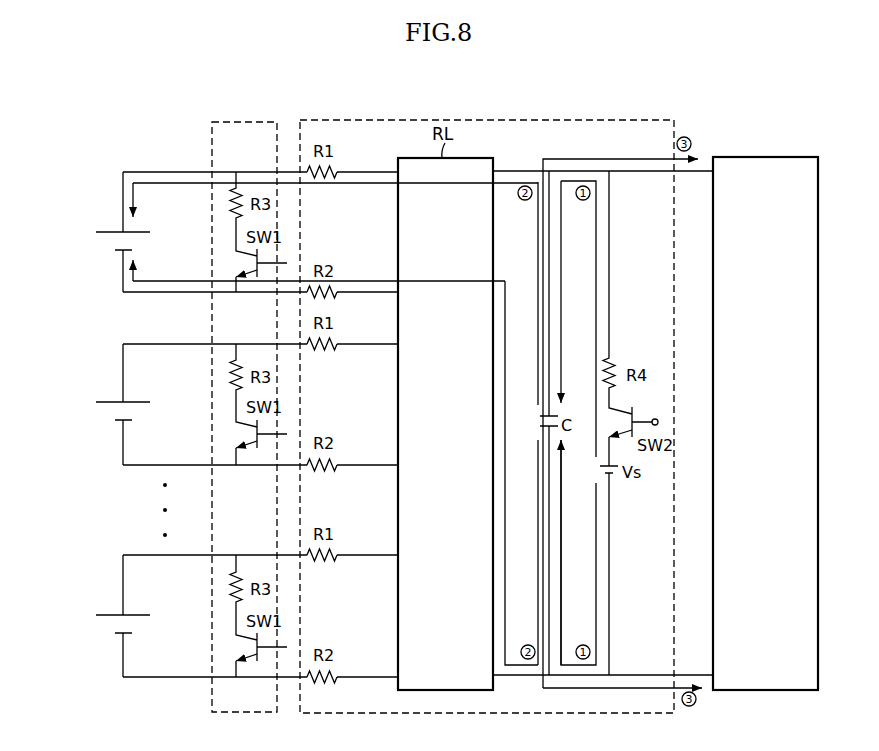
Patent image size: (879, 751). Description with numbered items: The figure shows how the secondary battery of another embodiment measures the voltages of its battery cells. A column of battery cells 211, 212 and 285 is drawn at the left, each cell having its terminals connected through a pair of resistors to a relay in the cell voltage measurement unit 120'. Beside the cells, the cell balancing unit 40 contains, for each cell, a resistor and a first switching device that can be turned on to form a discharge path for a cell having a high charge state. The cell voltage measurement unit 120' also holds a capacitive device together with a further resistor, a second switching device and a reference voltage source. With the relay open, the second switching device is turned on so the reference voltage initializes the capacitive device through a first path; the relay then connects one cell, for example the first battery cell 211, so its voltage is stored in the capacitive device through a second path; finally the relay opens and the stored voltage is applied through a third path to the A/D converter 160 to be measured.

The cell balancing unit 40 is at (243, 121).
The cell voltage measurement unit 120' is at (487, 398).
The A/D converter 160 is at (761, 157).
The first battery cell 211 is at (97, 225).
The battery cell 212 is at (97, 395).
The battery cell 285 is at (100, 612).